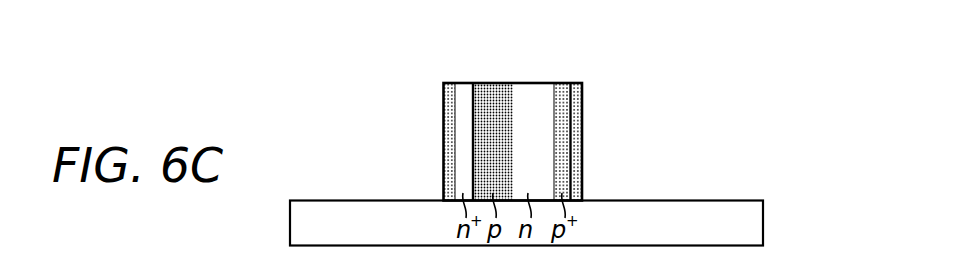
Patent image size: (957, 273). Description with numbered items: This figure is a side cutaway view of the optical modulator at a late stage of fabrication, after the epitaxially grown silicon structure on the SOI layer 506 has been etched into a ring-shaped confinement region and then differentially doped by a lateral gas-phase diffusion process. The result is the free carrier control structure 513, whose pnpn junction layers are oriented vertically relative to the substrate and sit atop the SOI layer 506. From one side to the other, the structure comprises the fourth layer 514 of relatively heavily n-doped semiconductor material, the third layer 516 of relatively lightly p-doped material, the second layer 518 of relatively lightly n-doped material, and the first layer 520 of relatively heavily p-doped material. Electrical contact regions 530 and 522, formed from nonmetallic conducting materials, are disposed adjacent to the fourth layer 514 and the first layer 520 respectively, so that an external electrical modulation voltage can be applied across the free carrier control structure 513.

The SOI layer 506 is at (763, 222).
The free carrier control structure 513 is at (298, 92).
The fourth layer 514 is at (465, 83).
The third layer 516 is at (493, 83).
The second layer 518 is at (532, 83).
The first layer 520 is at (562, 83).
The electrical contact region 522 is at (583, 83).
The electrical contact region 530 is at (447, 83).